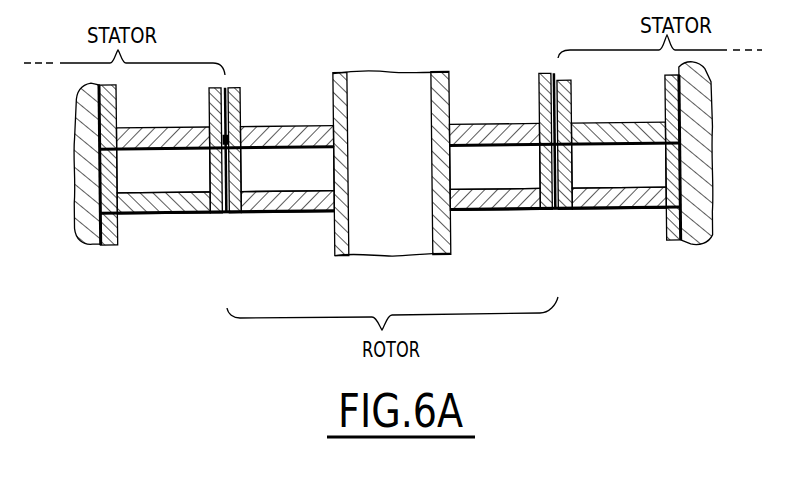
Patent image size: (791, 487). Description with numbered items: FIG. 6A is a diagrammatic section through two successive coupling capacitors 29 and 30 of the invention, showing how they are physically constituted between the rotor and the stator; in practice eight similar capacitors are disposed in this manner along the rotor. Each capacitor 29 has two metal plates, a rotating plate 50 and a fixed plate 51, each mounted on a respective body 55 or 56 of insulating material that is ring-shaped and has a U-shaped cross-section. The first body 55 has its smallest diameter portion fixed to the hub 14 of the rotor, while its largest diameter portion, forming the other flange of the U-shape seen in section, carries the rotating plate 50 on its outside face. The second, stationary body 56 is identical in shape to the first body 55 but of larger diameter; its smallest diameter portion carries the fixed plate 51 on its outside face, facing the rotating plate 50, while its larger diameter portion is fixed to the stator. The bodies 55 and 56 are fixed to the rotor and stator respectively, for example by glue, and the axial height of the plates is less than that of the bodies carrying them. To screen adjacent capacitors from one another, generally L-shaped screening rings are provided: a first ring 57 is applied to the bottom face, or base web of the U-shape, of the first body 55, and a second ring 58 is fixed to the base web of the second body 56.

The hub 14 is at (413, 83).
The coupling capacitor 29 is at (252, 79).
The coupling capacitor 30 is at (165, 220).
The rotating plate 50 is at (242, 104).
The fixed plate 51 is at (210, 104).
The first body 55 is at (317, 122).
The second body 56 is at (141, 124).
The first ring 57 is at (268, 150).
The second ring 58 is at (158, 152).